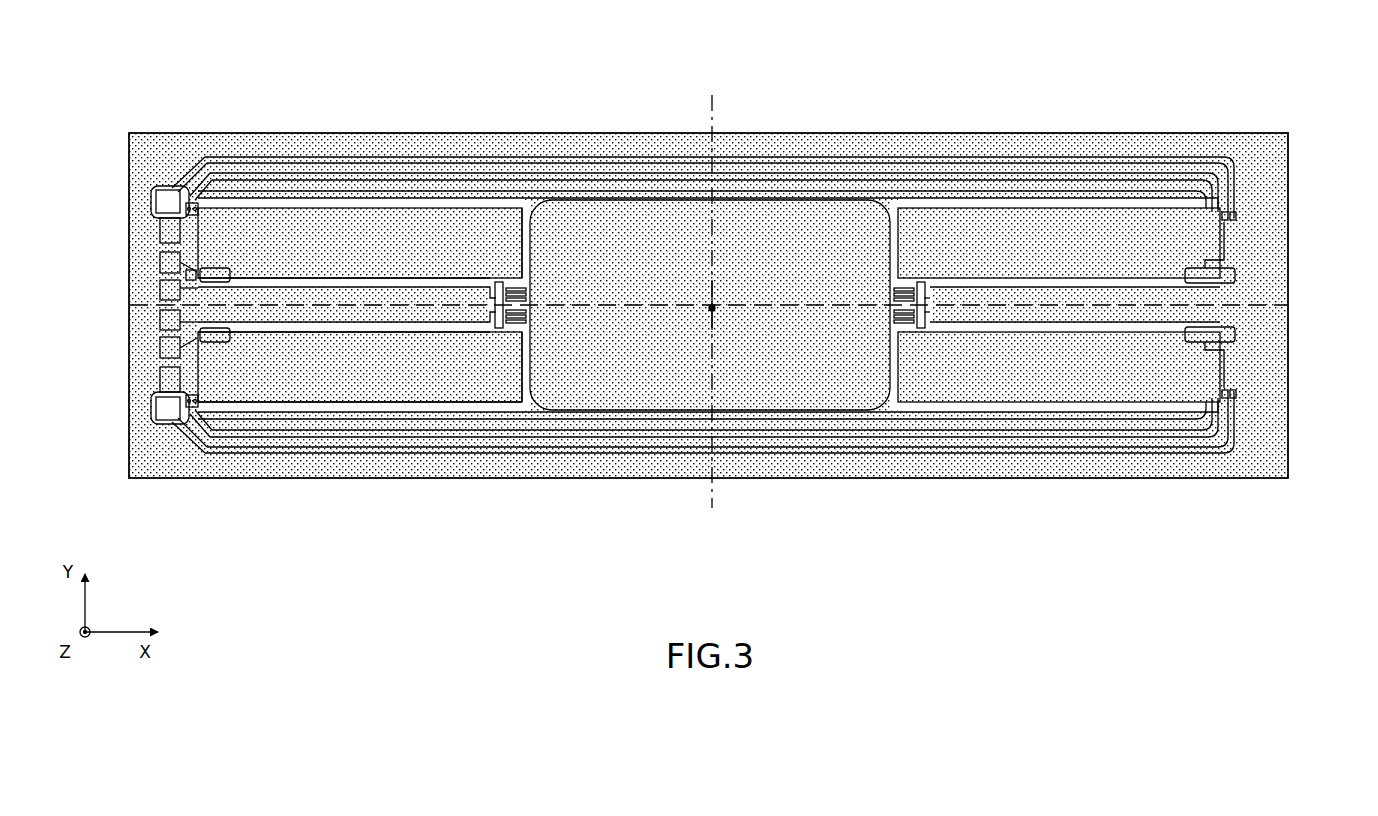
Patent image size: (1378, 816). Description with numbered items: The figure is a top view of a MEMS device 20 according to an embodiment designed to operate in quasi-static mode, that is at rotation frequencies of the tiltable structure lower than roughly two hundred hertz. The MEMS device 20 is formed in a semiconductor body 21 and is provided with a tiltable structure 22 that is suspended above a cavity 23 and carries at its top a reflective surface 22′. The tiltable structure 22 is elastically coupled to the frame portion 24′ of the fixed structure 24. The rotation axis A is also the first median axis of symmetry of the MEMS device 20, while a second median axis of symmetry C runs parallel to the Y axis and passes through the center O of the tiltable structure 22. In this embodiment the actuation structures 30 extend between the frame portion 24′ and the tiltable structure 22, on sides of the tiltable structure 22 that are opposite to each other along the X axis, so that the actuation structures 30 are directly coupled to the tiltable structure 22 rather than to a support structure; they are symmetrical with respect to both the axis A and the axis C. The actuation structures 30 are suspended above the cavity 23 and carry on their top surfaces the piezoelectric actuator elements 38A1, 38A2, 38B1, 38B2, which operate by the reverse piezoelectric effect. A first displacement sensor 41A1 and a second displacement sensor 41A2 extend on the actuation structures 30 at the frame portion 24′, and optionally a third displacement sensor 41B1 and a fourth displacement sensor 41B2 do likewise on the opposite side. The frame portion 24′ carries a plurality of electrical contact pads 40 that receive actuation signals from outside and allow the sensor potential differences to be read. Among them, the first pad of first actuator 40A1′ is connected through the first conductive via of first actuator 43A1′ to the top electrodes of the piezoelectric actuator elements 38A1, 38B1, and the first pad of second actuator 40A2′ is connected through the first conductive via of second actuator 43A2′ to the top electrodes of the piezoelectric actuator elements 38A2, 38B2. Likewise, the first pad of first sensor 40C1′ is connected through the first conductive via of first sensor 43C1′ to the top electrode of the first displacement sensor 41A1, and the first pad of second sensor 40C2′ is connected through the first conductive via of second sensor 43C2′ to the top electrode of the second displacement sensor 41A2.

The MEMS device 20 is at (163, 78).
The semiconductor body 21 is at (1295, 157).
The tiltable structure 22 is at (523, 338).
The reflective surface 22′ is at (785, 362).
The cavity 23 is at (530, 425).
The fixed structure 24 is at (1010, 137).
The frame portion 24′ is at (247, 135).
The actuation structures 30 is at (530, 243).
The piezoelectric actuator element 38A1 is at (326, 239).
The piezoelectric actuator element 38A2 is at (326, 362).
The piezoelectric actuator element 38B1 is at (1039, 247).
The piezoelectric actuator element 38B2 is at (1039, 372).
The electrical contact pads 40 is at (150, 152).
The first pad of first actuator 40A1′ is at (165, 195).
The first pad of first sensor 40C1′ is at (160, 290).
The first pad of second sensor 40C2′ is at (160, 318).
The first pad of second actuator 40A2′ is at (165, 412).
The first displacement sensor 41A1 is at (205, 268).
The second displacement sensor 41A2 is at (210, 348).
The third displacement sensor 41B1 is at (1225, 262).
The fourth displacement sensor 41B2 is at (1225, 340).
The first conductive via of first actuator 43A1′ is at (430, 178).
The first conductive via of second actuator 43A2′ is at (330, 435).
The first conductive via of first sensor 43C1′ is at (228, 282).
The first conductive via of second sensor 43C2′ is at (213, 338).
The rotation axis / first median axis of symmetry A is at (760, 300).
The center O is at (714, 312).
The second median axis of symmetry C is at (712, 505).